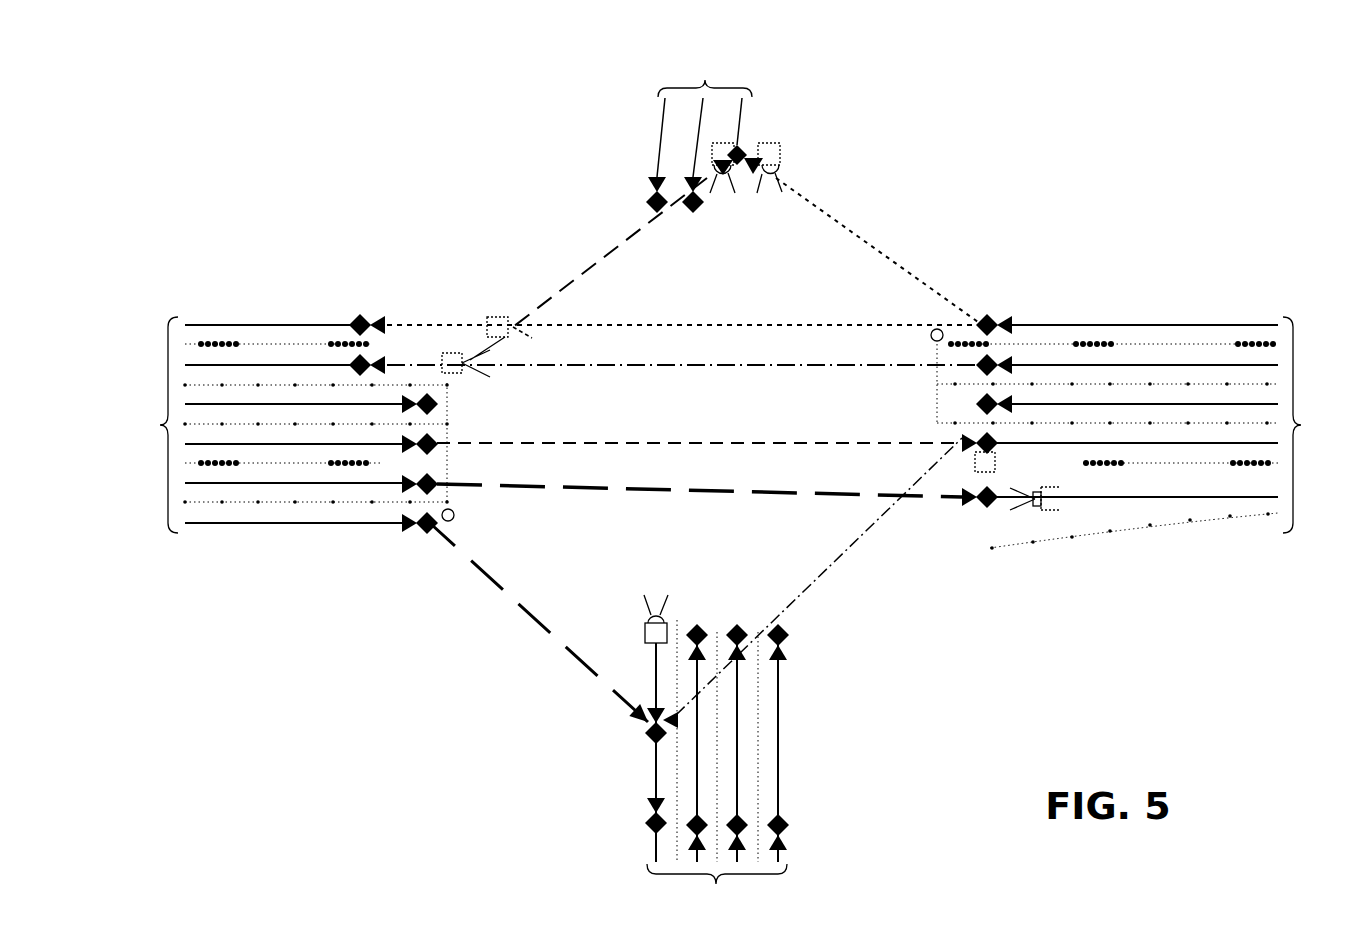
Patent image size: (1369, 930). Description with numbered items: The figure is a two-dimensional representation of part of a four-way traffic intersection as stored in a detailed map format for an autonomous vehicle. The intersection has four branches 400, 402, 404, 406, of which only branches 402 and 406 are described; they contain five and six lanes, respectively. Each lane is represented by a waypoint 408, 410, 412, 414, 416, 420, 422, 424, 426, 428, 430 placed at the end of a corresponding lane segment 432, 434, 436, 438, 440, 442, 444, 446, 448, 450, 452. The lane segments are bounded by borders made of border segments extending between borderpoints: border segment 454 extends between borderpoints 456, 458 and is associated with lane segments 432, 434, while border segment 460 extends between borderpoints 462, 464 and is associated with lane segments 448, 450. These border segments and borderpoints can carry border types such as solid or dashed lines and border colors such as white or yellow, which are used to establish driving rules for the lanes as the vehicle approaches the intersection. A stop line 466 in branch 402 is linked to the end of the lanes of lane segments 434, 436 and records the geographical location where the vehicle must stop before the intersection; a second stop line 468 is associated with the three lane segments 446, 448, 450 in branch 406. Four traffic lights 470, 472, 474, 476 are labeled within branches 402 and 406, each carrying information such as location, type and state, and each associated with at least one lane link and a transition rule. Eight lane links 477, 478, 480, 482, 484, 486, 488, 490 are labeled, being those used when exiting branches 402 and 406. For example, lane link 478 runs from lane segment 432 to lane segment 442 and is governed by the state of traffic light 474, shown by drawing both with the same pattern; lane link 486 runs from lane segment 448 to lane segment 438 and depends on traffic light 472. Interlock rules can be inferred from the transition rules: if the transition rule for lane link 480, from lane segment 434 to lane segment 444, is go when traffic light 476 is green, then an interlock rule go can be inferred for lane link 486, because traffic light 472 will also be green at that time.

The branch 400 is at (716, 884).
The branch 402 is at (1303, 350).
The branch 404 is at (714, 133).
The branch 406 is at (160, 424).
The waypoint 408 is at (985, 320).
The waypoint 410 is at (995, 360).
The waypoint 412 is at (982, 398).
The waypoint 414 is at (977, 438).
The waypoint 416 is at (985, 507).
The waypoint 420 is at (358, 317).
The waypoint 422 is at (367, 360).
The waypoint 424 is at (440, 403).
The waypoint 426 is at (400, 447).
The waypoint 428 is at (437, 480).
The waypoint 430 is at (428, 533).
The lane segment 432 is at (1055, 325).
The lane segment 434 is at (1128, 365).
The lane segment 436 is at (1170, 404).
The lane segment 438 is at (1163, 443).
The lane segment 440 is at (1123, 498).
The lane segment 442 is at (307, 325).
The lane segment 444 is at (200, 365).
The lane segment 446 is at (278, 404).
The lane segment 448 is at (312, 443).
The lane segment 450 is at (280, 485).
The lane segment 452 is at (220, 523).
The border segment 454 is at (1175, 344).
The borderpoint 456 is at (1113, 344).
The borderpoint 458 is at (1237, 344).
The border segment 460 is at (255, 465).
The borderpoint 462 is at (328, 465).
The borderpoint 464 is at (235, 465).
The stop line 466 is at (937, 357).
The stop line 468 is at (448, 424).
The traffic light 470 is at (1040, 505).
The traffic light 472 is at (982, 468).
The traffic light 474 is at (497, 316).
The traffic light 476 is at (452, 353).
The lane link 477 is at (877, 249).
The lane link 478 is at (890, 323).
The lane link 480 is at (868, 365).
The lane link 482 is at (918, 468).
The lane link 484 is at (620, 255).
The lane link 486 is at (594, 442).
The lane link 488 is at (577, 487).
The lane link 490 is at (520, 612).